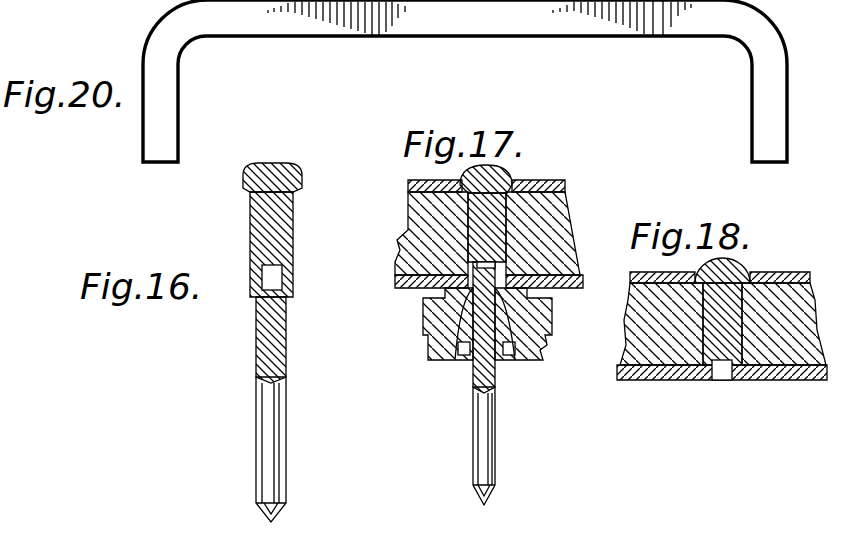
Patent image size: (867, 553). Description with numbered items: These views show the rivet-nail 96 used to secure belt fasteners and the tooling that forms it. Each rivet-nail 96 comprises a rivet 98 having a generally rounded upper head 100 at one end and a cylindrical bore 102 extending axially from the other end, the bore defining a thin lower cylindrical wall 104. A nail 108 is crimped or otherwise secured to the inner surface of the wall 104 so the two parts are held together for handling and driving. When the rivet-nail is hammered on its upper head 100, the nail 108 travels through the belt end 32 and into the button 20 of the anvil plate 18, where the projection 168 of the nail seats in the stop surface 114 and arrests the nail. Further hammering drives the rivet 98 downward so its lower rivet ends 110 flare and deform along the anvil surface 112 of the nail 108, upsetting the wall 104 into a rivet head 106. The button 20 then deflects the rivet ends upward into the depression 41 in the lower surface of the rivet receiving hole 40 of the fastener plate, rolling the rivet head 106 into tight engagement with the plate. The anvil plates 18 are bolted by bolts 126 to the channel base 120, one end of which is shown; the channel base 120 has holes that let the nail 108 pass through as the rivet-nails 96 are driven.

In FIG. 20, the channel base 120 is at (131, 118).
In FIG. 20, the bolts 126 is at (58, 8).
In FIG. 16, the rivet-nail 96 is at (264, 320).
In FIG. 17, the rivet-nail 96 is at (479, 322).
In FIG. 16, the rivet 98 is at (294, 226).
In FIG. 17, the rivet 98 is at (440, 257).
In FIG. 16, the upper head 100 is at (288, 139).
In FIG. 17, the upper head 100 is at (462, 175).
In FIG. 16, the cylindrical bore 102 is at (275, 279).
In FIG. 16, the lower cylindrical wall 104 is at (250, 268).
In FIG. 16, the rivet ends 110 is at (291, 297).
In FIG. 16, the anvil surface 112 is at (258, 312).
In FIG. 17, the anvil surface 112 is at (432, 362).
In FIG. 16, the projection 168 is at (288, 320).
In FIG. 16, the nail 108 is at (272, 445).
In FIG. 17, the nail 108 is at (470, 443).
In FIG. 17, the belt end 32 is at (557, 228).
In FIG. 17, the button 20 is at (537, 297).
In FIG. 17, the anvil plate 18 is at (552, 338).
In FIG. 17, the stop surface 114 is at (517, 358).
In FIG. 18, the rivet head 106 is at (698, 380).
In FIG. 18, the depression 41 is at (738, 381).
In FIG. 18, the rivet receiving holes 40 is at (770, 380).